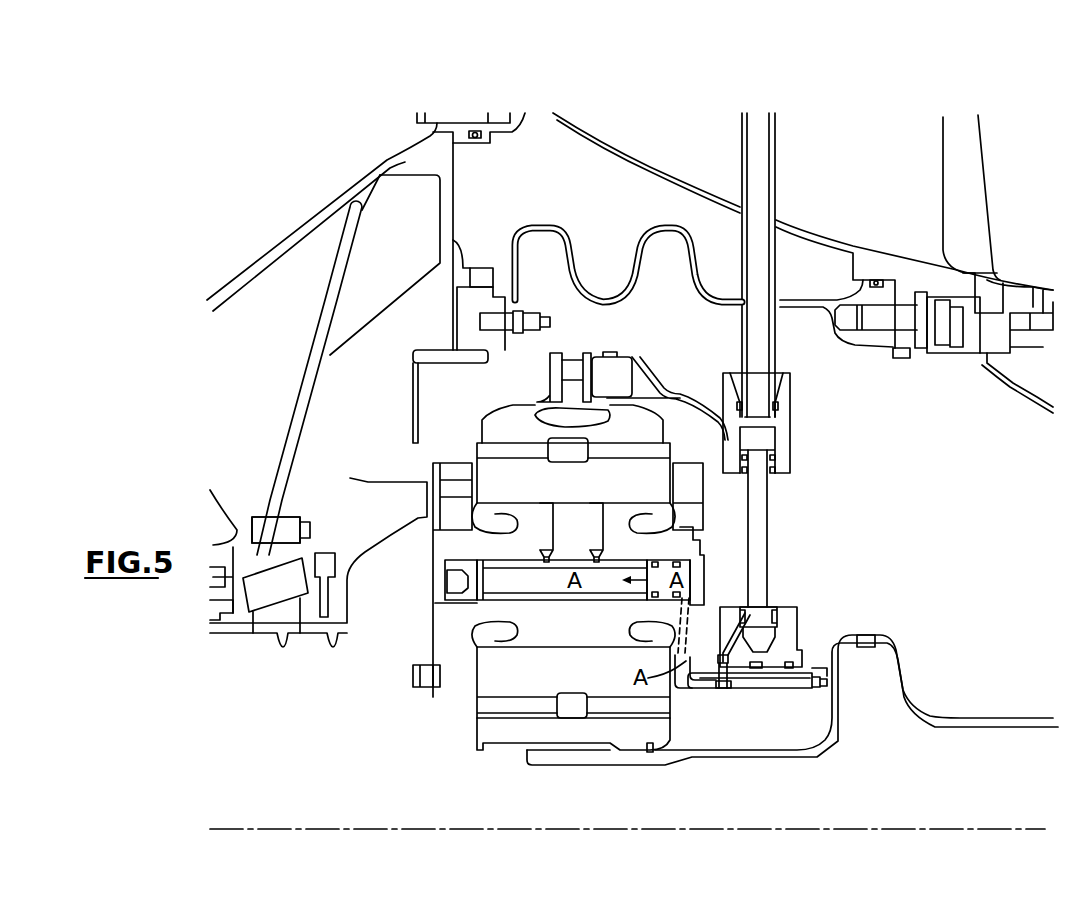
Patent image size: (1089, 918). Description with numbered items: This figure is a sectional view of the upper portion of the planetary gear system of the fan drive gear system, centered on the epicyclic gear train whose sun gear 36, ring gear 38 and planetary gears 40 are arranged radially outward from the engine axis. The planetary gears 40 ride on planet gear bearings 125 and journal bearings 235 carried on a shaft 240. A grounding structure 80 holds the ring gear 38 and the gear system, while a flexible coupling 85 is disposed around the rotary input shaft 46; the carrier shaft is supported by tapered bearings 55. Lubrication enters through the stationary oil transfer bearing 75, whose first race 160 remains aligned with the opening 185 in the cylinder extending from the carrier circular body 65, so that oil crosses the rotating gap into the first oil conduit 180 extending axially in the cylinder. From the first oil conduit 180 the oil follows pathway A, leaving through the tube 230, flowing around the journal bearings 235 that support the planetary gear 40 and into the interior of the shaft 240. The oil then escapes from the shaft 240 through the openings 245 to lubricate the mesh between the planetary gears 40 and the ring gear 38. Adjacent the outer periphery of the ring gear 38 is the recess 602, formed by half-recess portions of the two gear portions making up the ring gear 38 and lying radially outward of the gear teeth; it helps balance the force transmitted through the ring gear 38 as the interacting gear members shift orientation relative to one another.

The sun gear 36 is at (556, 646).
The ring gear 38 is at (517, 425).
The planetary gears 40 is at (534, 494).
The rotary input shaft 46 is at (738, 756).
The tapered bearings 55 is at (272, 587).
The carrier circular body 65 is at (686, 663).
The oil transfer bearing 75 is at (797, 632).
The grounding structure 80 is at (330, 321).
The flexible coupling 85 is at (560, 226).
The planet gear bearings 125 is at (694, 533).
The first race 160 is at (719, 690).
The first oil conduit 180 is at (725, 685).
The opening 185 is at (730, 677).
The tube 230 is at (680, 612).
The journal bearings 235 is at (704, 545).
The shaft 240 is at (502, 572).
The openings 245 is at (593, 525).
The recess 602 is at (580, 418).